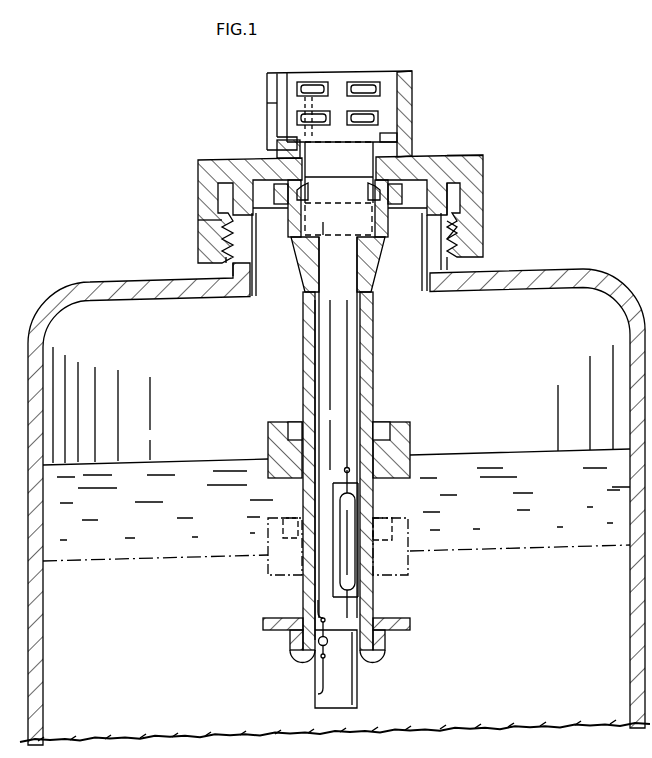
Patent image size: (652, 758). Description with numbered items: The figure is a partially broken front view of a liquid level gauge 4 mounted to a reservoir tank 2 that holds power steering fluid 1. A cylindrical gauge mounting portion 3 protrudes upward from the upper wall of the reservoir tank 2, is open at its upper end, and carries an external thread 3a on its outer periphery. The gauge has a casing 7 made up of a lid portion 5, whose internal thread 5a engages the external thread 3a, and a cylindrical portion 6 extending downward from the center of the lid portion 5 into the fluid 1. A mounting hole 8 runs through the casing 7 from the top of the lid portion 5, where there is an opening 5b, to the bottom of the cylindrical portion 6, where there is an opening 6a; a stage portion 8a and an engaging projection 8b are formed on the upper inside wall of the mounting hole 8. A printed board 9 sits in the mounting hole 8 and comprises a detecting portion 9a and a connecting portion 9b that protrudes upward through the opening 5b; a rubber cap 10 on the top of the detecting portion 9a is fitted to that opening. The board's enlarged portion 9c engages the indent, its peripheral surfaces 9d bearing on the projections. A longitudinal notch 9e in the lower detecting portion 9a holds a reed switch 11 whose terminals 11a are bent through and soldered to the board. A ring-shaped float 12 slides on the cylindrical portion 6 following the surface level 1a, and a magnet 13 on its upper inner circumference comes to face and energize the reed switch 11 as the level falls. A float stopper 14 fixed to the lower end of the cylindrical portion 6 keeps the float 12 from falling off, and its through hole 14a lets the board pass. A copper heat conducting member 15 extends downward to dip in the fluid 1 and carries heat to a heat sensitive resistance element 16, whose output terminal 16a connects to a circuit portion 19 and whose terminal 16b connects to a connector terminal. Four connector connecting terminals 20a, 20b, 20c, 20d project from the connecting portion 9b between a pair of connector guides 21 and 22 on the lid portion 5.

The power steering fluid 1 is at (472, 452).
The surface level 1a is at (516, 452).
The reservoir tank 2 is at (133, 282).
The gauge mounting portion 3 is at (447, 266).
The external thread 3a is at (458, 237).
The liquid level gauge 4 is at (208, 158).
The lid portion 5 is at (486, 165).
The internal thread 5a is at (455, 213).
The opening 5b is at (385, 140).
The cylindrical portion 6 is at (373, 350).
The opening 6a is at (372, 668).
The casing 7 is at (468, 156).
The mounting hole 8 is at (360, 308).
The stage portion 8a is at (297, 262).
The engaging projection 8b is at (368, 195).
The printed board 9 is at (330, 352).
The detecting portion 9a is at (310, 380).
The connecting portion 9b is at (386, 78).
The enlarged portion 9c is at (290, 240).
The peripheral surfaces 9d is at (287, 224).
The notch 9e is at (360, 488).
The rubber cap 10 is at (290, 152).
The reed switch 11 is at (352, 590).
The terminals 11a is at (347, 470).
The float 12 is at (408, 425).
The magnet 13 is at (384, 425).
The float stopper 14 is at (378, 643).
The through hole 14a is at (312, 665).
The heat conducting member 15 is at (354, 690).
The heat sensitive resistance element 16 is at (318, 640).
The output terminal 16a is at (310, 618).
The terminal 16b is at (318, 690).
The circuit portion 19 is at (352, 236).
The connector connecting terminal 20a is at (310, 82).
The connector connecting terminal 20b is at (360, 82).
The connector connecting terminal 20c is at (298, 113).
The connector connecting terminal 20d is at (380, 113).
The connector guide 21 is at (413, 82).
The connector guide 22 is at (272, 92).